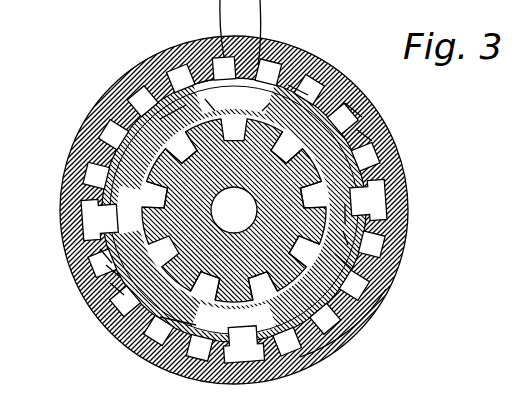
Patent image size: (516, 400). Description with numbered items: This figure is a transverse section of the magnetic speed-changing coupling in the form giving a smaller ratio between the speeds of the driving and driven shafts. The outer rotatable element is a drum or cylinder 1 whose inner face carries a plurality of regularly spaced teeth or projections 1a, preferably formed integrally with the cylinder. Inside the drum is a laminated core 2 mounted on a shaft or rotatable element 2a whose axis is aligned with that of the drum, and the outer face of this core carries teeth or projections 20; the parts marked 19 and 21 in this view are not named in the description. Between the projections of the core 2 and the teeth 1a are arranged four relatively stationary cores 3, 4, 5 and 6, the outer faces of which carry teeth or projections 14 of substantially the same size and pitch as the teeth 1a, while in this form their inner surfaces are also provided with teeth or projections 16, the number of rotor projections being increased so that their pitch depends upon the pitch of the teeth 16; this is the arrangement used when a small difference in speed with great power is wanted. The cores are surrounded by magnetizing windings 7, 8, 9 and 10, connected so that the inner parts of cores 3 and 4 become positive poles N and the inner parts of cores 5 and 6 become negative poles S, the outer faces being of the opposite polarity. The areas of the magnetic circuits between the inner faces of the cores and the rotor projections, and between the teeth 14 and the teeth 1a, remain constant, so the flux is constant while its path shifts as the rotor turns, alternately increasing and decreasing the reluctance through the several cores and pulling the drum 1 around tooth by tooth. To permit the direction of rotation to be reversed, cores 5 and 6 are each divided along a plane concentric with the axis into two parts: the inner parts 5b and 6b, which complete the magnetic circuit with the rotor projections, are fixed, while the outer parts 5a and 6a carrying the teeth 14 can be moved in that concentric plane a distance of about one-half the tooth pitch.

The drum or cylinder 1 is at (86, 200).
The teeth or projections 1a is at (130, 117).
The core 2 is at (234, 138).
The shaft or rotatable element 2a is at (234, 210).
The stationary core 3 is at (172, 114).
The stationary core 4 is at (352, 264).
The stationary core 5 is at (356, 112).
The movable core part 5a is at (300, 84).
The fixed core part 5b is at (260, 104).
The stationary core 6 is at (116, 292).
The movable core part 6a is at (106, 260).
The fixed core part 6b is at (112, 274).
The magnetizing winding 7 is at (218, 104).
The magnetizing winding 8 is at (353, 235).
The magnetizing winding 9 is at (353, 214).
The magnetizing winding 10 is at (196, 328).
The teeth or projections 14 is at (305, 118).
The teeth or projections 16 is at (248, 215).
The rotor slot 19 is at (287, 148).
The teeth or projections 20 is at (148, 194).
The rotor slot 21 is at (318, 241).
The positive pole N is at (366, 138).
The negative pole S is at (202, 90).